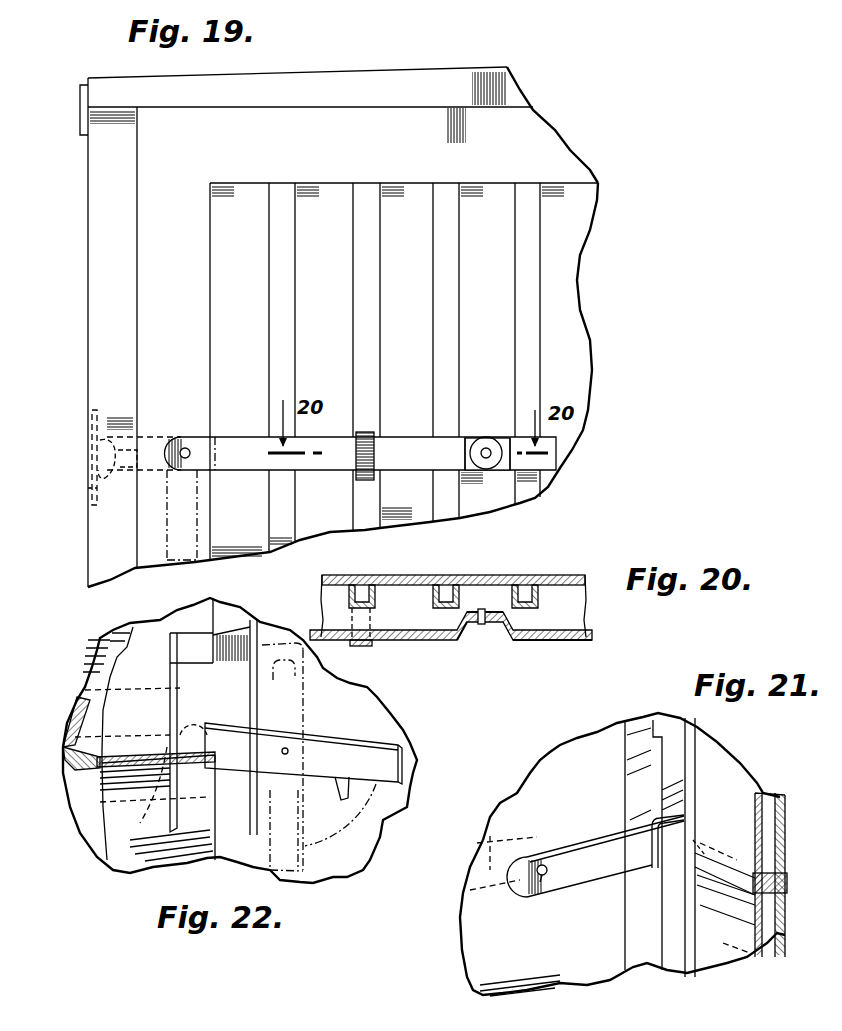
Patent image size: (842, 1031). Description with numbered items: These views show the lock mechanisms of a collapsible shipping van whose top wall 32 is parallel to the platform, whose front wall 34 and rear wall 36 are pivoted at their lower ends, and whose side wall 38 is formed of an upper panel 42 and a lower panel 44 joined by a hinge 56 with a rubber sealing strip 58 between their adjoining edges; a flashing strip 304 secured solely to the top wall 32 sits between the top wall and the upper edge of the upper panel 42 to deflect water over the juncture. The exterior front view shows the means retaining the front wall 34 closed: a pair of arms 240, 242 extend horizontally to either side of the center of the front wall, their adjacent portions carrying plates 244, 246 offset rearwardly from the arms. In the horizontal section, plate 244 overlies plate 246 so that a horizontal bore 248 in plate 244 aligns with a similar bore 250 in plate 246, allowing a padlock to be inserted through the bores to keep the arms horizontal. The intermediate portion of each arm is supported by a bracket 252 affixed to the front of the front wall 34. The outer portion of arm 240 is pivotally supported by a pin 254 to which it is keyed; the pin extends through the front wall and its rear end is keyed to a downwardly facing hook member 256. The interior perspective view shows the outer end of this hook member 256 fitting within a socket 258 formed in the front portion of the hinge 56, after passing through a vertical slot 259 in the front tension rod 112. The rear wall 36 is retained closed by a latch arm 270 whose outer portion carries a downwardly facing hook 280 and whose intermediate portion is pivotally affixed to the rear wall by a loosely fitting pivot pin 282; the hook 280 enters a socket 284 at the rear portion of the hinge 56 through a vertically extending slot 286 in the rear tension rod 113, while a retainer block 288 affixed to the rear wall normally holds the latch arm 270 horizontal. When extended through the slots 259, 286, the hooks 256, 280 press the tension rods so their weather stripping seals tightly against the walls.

In FIG. 19, the top wall 32 is at (477, 72).
In FIG. 19, the flashing strip 304 is at (80, 115).
In FIG. 19, the front wall 34 is at (586, 256).
In FIG. 20, the front wall 34 is at (578, 577).
In FIG. 21, the front wall 34 is at (567, 759).
In FIG. 19, the side wall 38 is at (85, 377).
In FIG. 22, the side wall 38 is at (74, 842).
In FIG. 21, the side wall 38 is at (722, 758).
In FIG. 22, the rear wall 36 is at (353, 858).
In FIG. 22, the upper panel 42 is at (115, 644).
In FIG. 22, the lower panel 44 is at (127, 850).
In FIG. 19, the hinge 56 is at (90, 490).
In FIG. 22, the hinge 56 is at (80, 710).
In FIG. 21, the hinge 56 is at (790, 897).
In FIG. 22, the sealing strip 58 is at (67, 800).
In FIG. 21, the front tension rod 112 is at (637, 737).
In FIG. 22, the rear tension rod 113 is at (228, 637).
In FIG. 19, the arm 240 is at (258, 446).
In FIG. 20, the arm 240 is at (424, 633).
In FIG. 21, the arm 240 is at (577, 874).
In FIG. 19, the arm 242 is at (556, 457).
In FIG. 20, the arm 242 is at (583, 636).
In FIG. 20, the plate 244 is at (497, 624).
In FIG. 20, the plate 246 is at (499, 612).
In FIG. 20, the bore 248 is at (476, 639).
In FIG. 20, the bore 250 is at (481, 609).
In FIG. 19, the bracket 252 is at (360, 450).
In FIG. 20, the bracket 252 is at (366, 647).
In FIG. 19, the pin 254 is at (185, 449).
In FIG. 21, the pin 254 is at (550, 880).
In FIG. 19, the hook member 256 is at (150, 437).
In FIG. 21, the hook member 256 is at (590, 847).
In FIG. 19, the socket 258 is at (97, 453).
In FIG. 21, the socket 258 is at (695, 842).
In FIG. 21, the vertical slot 259 is at (664, 757).
In FIG. 22, the latch arm 270 is at (320, 747).
In FIG. 22, the hook 280 is at (183, 737).
In FIG. 22, the pivot pin 282 is at (288, 748).
In FIG. 22, the socket 284 is at (156, 796).
In FIG. 22, the slot 286 is at (170, 663).
In FIG. 22, the retainer block 288 is at (350, 795).